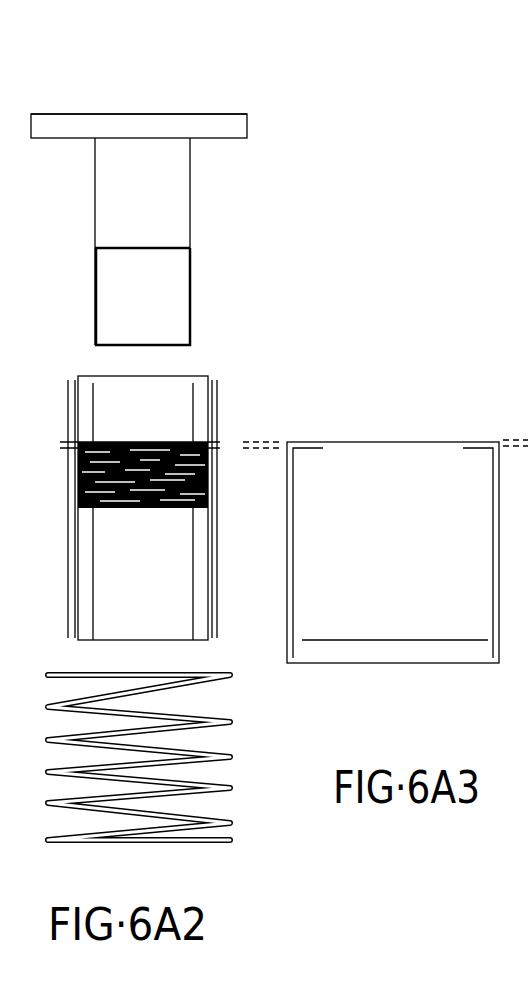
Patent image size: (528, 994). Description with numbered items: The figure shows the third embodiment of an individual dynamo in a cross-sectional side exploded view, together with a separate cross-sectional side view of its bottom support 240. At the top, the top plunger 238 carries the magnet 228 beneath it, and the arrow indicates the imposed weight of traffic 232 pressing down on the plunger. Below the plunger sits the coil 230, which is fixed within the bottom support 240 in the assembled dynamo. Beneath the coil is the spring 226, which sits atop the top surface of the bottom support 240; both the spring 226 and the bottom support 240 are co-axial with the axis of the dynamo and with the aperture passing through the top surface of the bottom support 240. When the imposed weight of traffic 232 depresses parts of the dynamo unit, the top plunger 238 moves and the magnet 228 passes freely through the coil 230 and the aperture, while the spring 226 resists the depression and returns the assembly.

In FIG. 6A2, the spring 226 is at (197, 785).
In FIG. 6A2, the magnet 228 is at (158, 303).
In FIG. 6A2, the coil 230 is at (138, 442).
In FIG. 6A2, the imposed weight of traffic 232 is at (127, 98).
In FIG. 6A2, the top plunger 238 is at (120, 118).
In FIG. 6A3, the bottom support 240 is at (347, 658).